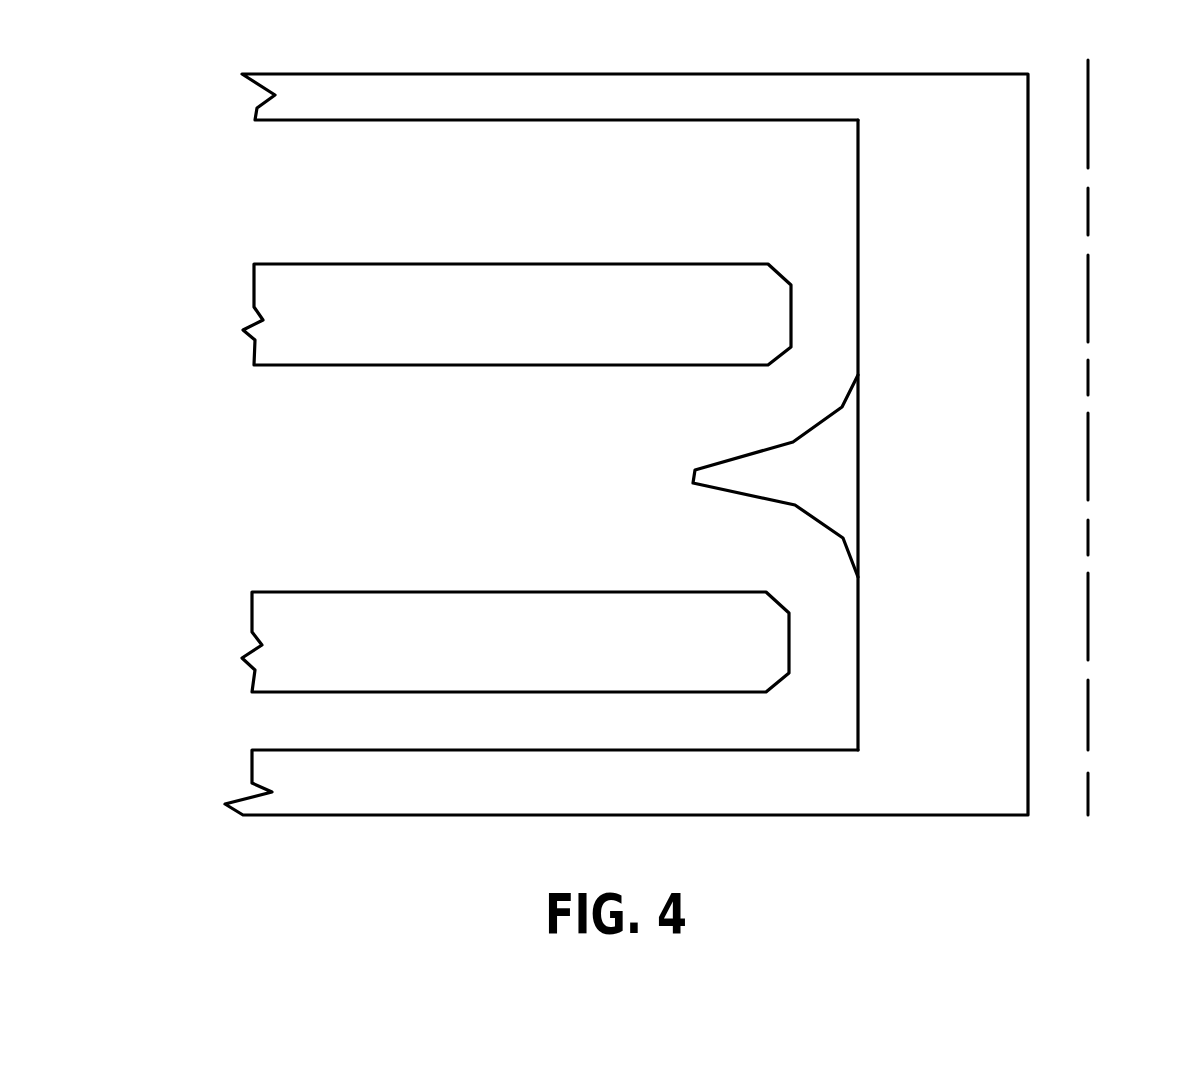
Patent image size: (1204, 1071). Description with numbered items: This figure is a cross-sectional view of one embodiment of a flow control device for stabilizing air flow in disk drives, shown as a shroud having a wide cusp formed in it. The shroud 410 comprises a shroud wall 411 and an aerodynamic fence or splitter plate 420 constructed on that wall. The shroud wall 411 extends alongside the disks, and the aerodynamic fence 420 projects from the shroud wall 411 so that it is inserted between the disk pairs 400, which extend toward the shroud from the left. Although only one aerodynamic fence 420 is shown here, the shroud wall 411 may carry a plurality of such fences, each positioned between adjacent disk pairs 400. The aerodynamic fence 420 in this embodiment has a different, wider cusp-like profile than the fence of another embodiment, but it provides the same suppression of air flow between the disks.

The disk pairs 400 is at (314, 390).
The shroud 410 is at (1036, 259).
The shroud wall 411 is at (858, 170).
The aerodynamic fence 420 is at (800, 520).